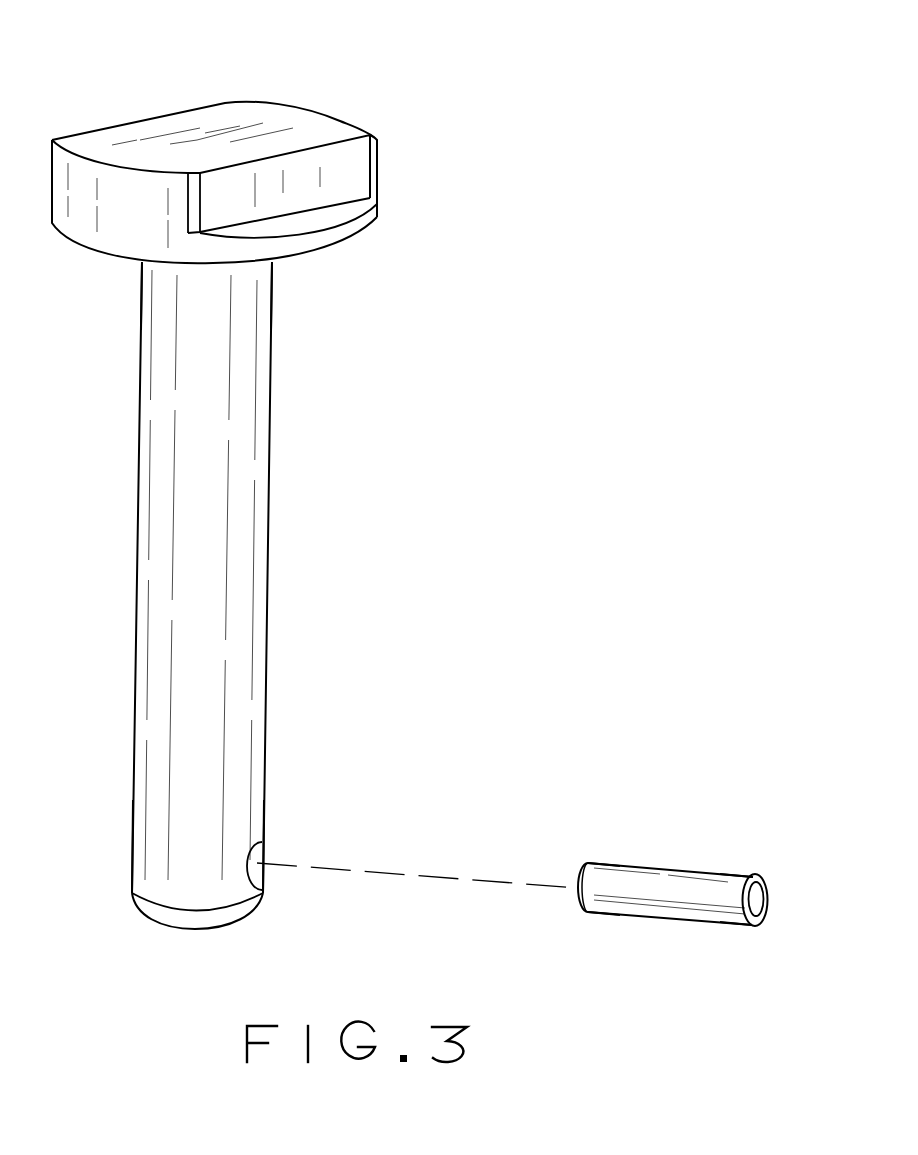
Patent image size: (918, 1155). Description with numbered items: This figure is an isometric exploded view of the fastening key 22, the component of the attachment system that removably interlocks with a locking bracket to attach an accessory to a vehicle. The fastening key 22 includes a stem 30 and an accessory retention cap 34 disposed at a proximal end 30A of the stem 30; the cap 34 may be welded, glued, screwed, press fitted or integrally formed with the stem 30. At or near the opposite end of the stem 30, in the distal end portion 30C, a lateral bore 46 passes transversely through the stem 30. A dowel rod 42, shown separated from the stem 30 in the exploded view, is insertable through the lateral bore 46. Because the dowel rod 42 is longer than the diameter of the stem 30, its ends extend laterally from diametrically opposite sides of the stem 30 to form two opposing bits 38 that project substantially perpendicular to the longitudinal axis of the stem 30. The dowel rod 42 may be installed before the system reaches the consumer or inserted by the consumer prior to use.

The fastening key 22 is at (438, 449).
The stem 30 is at (243, 470).
The proximal end 30A is at (162, 272).
The distal end portion 30C is at (235, 807).
The accessory retention cap 34 is at (298, 122).
The bit 38 is at (608, 872).
The dowel rod 42 is at (656, 890).
The lateral bore 46 is at (258, 855).